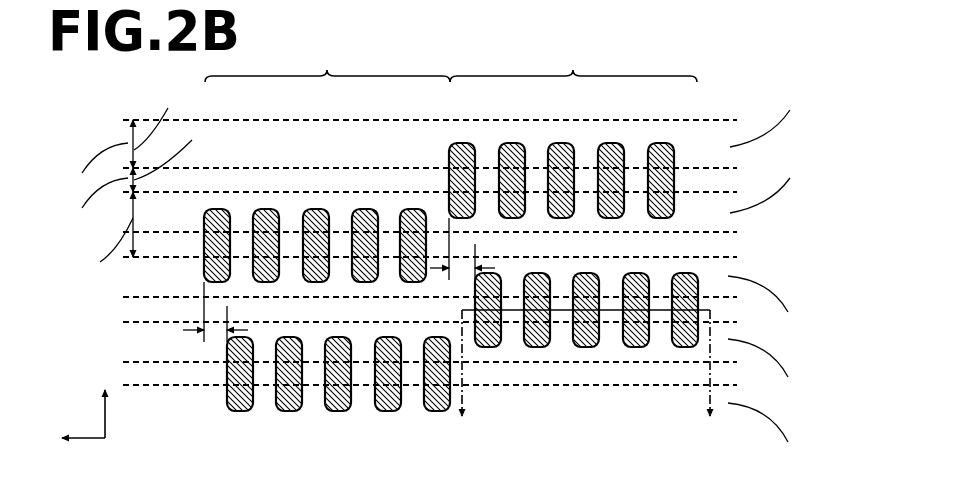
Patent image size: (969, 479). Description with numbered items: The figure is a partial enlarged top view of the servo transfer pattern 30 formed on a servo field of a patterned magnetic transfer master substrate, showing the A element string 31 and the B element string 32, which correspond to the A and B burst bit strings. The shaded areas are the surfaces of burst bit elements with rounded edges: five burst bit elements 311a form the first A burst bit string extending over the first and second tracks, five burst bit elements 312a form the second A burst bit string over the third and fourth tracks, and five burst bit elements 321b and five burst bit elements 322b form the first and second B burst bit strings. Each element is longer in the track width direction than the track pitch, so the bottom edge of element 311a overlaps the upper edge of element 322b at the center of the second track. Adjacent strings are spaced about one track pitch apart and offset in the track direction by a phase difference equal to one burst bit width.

The servo transfer pattern 30 is at (745, 22).
The A element string 31 is at (327, 63).
The B element string 32 is at (573, 63).
The burst bit element 311a is at (213, 210).
The burst bit element 312a is at (288, 408).
The burst bit element 321b is at (615, 145).
The burst bit element 322b is at (643, 275).